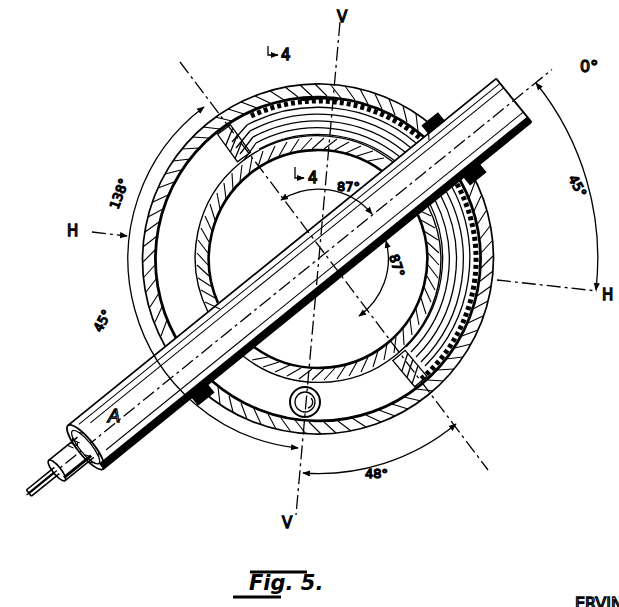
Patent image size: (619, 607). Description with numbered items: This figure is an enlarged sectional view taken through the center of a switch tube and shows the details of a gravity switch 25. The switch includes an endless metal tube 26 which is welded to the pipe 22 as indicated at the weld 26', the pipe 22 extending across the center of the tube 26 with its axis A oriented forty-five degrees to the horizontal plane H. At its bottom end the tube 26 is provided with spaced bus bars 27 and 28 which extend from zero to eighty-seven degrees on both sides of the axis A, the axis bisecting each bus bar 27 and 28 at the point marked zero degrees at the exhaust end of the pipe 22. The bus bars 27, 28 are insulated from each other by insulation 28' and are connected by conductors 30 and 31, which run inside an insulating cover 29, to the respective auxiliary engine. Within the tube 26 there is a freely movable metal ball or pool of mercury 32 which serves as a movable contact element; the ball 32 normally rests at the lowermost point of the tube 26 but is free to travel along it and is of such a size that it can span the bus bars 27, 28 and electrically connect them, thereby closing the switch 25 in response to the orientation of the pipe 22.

The pipe 22 is at (93, 417).
The gravity switch 25 is at (242, 91).
The endless metal tube 26 is at (359, 256).
The weld 26' is at (347, 265).
The bus bar 27 is at (387, 103).
The bus bar 28 is at (351, 211).
The insulation 28' is at (319, 72).
The insulating cover 29 is at (57, 460).
The conductor 30 is at (38, 476).
The conductor 31 is at (45, 478).
The metal ball 32 is at (321, 437).